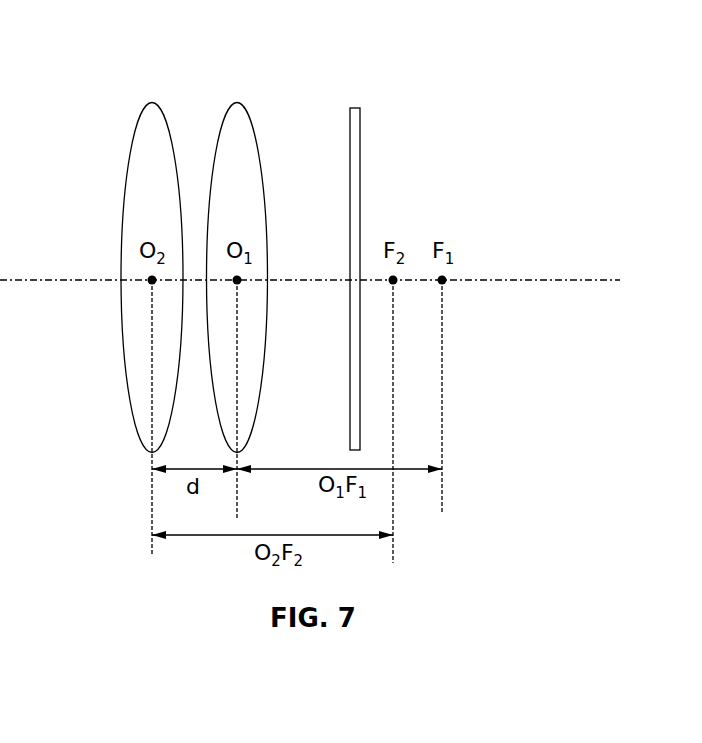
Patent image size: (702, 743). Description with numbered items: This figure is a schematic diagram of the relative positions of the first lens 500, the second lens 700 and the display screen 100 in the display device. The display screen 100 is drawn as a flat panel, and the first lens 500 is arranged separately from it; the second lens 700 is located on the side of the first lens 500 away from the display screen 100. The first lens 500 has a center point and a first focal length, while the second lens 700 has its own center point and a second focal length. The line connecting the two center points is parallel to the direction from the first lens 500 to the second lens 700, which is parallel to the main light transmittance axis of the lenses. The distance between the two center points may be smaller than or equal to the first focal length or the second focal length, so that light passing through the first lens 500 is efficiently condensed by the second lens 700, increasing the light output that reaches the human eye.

The second lens 700 is at (147, 130).
The first lens 500 is at (236, 130).
The display screen 100 is at (360, 130).